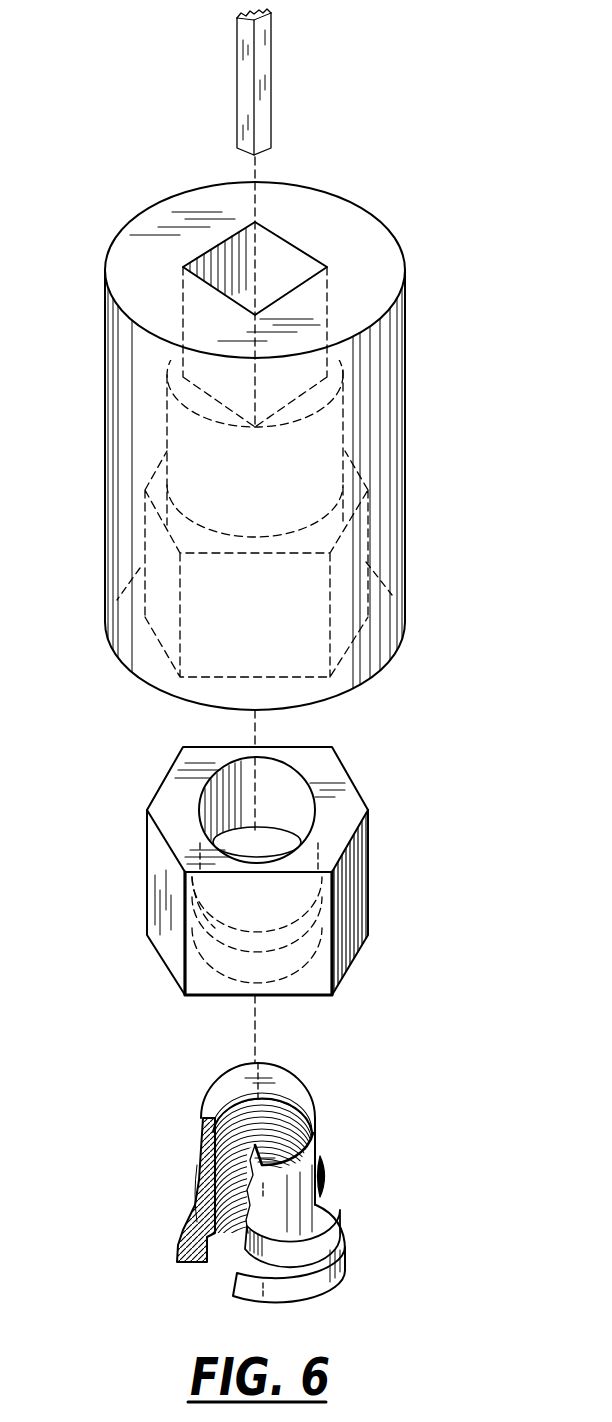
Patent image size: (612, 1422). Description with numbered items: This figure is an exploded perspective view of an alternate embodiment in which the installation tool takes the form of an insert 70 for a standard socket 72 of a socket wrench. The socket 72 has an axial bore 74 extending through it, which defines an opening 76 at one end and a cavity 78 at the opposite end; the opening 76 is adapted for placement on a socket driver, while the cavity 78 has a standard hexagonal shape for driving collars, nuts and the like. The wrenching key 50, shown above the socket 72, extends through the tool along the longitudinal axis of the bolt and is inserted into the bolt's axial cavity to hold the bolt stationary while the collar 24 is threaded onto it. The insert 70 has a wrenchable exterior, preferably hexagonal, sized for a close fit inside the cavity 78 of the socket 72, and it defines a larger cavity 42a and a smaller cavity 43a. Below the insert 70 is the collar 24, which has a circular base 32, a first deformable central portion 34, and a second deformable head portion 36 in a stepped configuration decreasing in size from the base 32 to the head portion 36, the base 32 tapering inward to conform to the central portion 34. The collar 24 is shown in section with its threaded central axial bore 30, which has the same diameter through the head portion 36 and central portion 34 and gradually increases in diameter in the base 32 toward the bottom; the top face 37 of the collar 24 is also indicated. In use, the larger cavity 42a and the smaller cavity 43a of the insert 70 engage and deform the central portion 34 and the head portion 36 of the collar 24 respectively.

The wrenching key 50 is at (262, 68).
The socket 72 is at (287, 441).
The opening 76 is at (292, 268).
The axial bore 74 is at (167, 433).
The cavity 78 is at (347, 597).
The insert 70 is at (257, 855).
The smaller cavity 43a is at (182, 917).
The larger cavity 42a is at (347, 973).
The collar 24 is at (265, 1164).
The top annular face 37 is at (282, 1088).
The central axial bore 30 is at (292, 1105).
The head portion 36 is at (323, 1168).
The central portion 34 is at (323, 1218).
The base 32 is at (345, 1240).